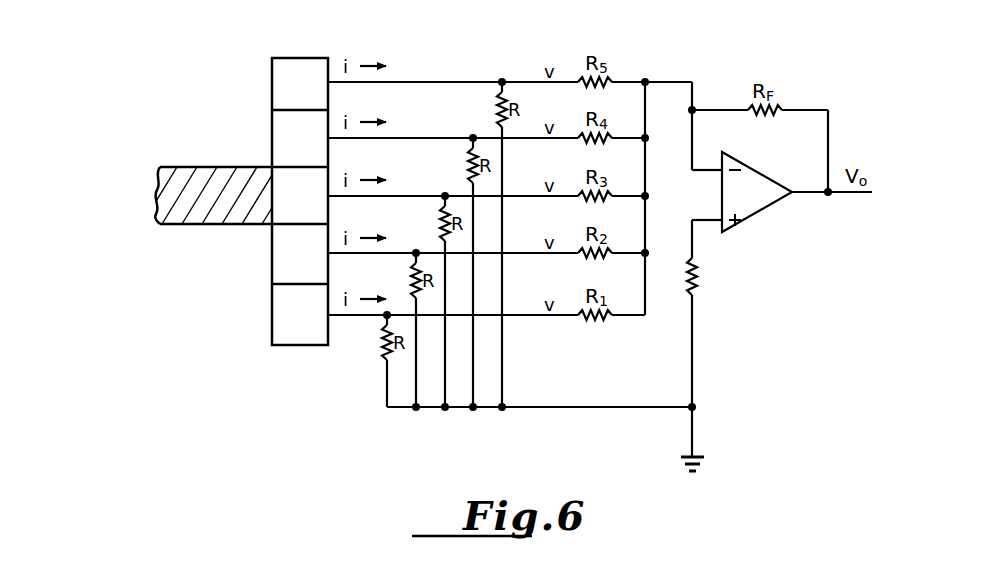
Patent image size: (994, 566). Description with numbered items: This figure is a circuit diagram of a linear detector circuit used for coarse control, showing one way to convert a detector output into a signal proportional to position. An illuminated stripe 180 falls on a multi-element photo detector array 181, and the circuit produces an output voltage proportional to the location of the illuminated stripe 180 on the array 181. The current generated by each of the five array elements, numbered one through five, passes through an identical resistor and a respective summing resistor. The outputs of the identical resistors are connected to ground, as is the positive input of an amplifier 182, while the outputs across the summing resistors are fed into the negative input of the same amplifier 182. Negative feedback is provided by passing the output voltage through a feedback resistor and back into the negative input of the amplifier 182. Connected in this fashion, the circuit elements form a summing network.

The illuminated stripe 180 is at (221, 172).
The multi-element photo detector array 181 is at (289, 62).
The amplifier 182 is at (752, 193).